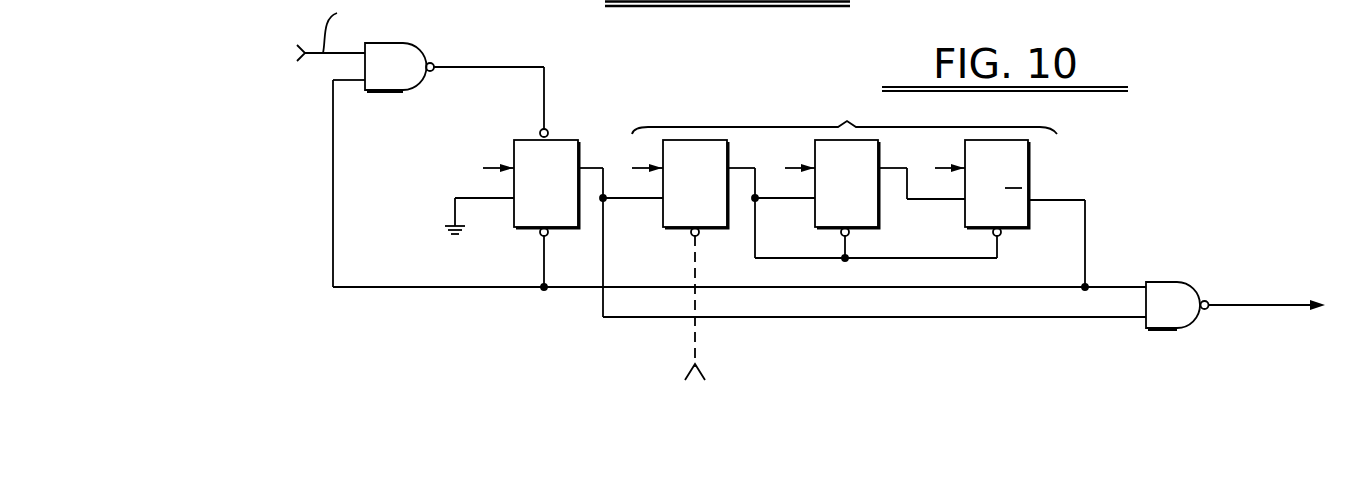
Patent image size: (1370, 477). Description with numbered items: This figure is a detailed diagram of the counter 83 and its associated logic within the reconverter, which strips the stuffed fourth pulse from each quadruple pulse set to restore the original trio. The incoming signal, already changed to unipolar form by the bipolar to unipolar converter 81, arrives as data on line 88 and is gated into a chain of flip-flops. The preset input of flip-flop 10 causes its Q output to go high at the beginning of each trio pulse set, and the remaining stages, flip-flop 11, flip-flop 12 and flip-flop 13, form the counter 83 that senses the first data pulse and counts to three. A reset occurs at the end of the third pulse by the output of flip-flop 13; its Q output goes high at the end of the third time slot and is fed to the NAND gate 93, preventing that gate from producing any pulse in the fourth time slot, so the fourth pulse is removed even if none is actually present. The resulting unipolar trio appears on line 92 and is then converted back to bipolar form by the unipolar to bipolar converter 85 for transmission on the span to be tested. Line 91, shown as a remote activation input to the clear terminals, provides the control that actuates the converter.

The bipolar to unipolar converter 81 is at (187, 120).
The line 88 is at (335, 56).
The flip-flop 10 is at (514, 150).
The flip-flop 11 is at (693, 140).
The flip-flop 12 is at (857, 229).
The flip-flop 13 is at (1030, 172).
The counter 83 is at (868, 179).
The line 91 is at (697, 346).
The line 92 is at (1287, 308).
The NAND gate 93 is at (1167, 281).
The unipolar to bipolar converter 85 is at (1242, 241).